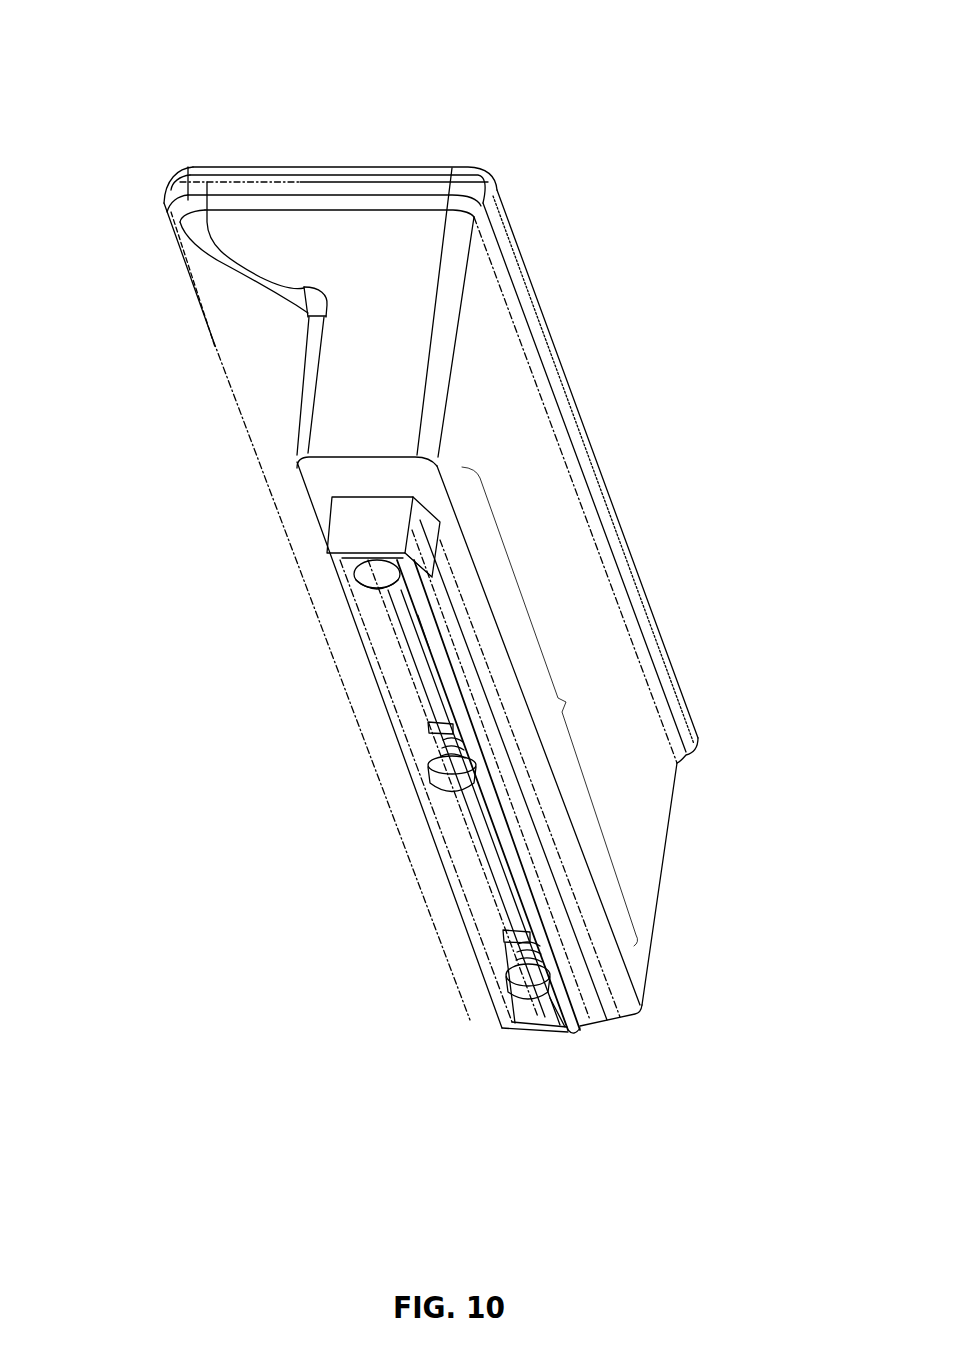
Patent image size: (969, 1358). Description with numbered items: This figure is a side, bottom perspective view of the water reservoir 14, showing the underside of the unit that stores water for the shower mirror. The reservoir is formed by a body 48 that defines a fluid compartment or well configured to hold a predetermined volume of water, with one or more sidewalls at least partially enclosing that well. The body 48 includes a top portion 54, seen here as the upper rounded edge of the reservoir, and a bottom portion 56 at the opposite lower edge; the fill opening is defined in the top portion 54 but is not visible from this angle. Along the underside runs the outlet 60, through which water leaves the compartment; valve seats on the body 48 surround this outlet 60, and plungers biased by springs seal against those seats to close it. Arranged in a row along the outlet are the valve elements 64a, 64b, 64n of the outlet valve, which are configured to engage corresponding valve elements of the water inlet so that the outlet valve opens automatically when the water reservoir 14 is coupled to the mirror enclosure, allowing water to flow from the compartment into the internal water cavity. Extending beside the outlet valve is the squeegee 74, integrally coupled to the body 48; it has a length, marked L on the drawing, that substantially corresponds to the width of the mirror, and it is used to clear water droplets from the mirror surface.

The water reservoir 14 is at (135, 102).
The top portion 54 is at (535, 112).
The body 48 is at (667, 845).
The bottom portion 56 is at (658, 1025).
The outlet 60 is at (471, 876).
The squeegee 74 is at (420, 623).
The valve element 64a is at (375, 588).
The valve element 64b is at (455, 790).
The valve element 64n is at (512, 983).